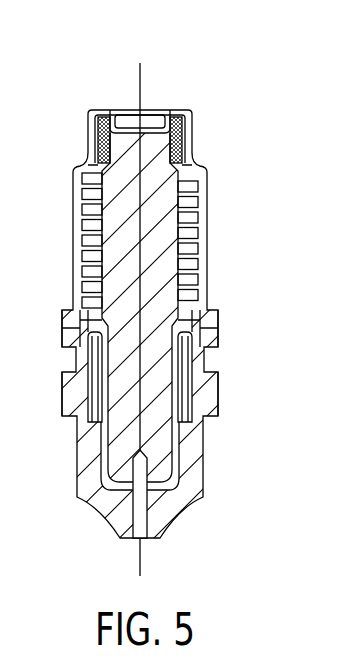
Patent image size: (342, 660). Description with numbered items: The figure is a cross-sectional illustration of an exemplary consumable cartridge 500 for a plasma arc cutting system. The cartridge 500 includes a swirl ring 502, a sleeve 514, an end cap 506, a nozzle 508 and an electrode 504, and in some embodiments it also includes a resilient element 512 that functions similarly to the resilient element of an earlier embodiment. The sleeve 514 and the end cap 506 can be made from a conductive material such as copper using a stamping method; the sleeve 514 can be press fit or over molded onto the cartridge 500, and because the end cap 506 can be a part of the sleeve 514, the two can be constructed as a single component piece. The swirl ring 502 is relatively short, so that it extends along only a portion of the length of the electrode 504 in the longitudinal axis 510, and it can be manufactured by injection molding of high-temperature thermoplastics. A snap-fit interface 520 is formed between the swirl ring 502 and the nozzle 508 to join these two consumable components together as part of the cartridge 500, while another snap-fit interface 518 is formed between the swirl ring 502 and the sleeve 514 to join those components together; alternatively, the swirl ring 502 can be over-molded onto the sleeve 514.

The cartridge 500 is at (74, 94).
The swirl ring 502 is at (62, 330).
The electrode 504 is at (126, 428).
The end cap 506 is at (175, 108).
The nozzle 508 is at (93, 488).
The longitudinal axis 510 is at (138, 78).
The resilient element 512 is at (89, 130).
The sleeve 514 is at (80, 240).
The snap-fit interface 518 is at (229, 297).
The snap-fit interface 520 is at (229, 368).